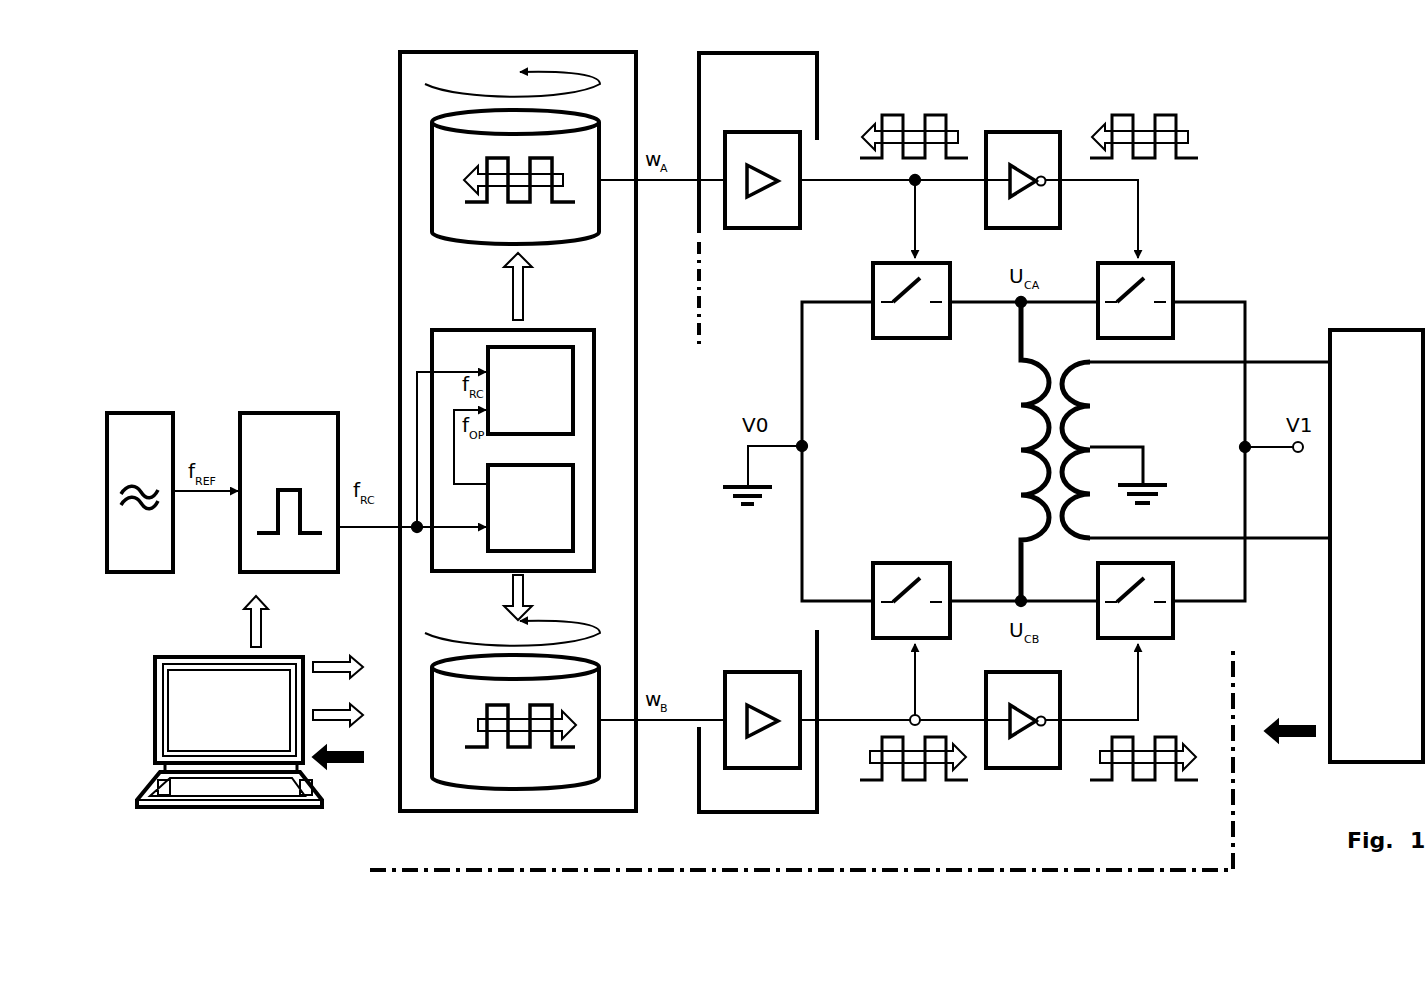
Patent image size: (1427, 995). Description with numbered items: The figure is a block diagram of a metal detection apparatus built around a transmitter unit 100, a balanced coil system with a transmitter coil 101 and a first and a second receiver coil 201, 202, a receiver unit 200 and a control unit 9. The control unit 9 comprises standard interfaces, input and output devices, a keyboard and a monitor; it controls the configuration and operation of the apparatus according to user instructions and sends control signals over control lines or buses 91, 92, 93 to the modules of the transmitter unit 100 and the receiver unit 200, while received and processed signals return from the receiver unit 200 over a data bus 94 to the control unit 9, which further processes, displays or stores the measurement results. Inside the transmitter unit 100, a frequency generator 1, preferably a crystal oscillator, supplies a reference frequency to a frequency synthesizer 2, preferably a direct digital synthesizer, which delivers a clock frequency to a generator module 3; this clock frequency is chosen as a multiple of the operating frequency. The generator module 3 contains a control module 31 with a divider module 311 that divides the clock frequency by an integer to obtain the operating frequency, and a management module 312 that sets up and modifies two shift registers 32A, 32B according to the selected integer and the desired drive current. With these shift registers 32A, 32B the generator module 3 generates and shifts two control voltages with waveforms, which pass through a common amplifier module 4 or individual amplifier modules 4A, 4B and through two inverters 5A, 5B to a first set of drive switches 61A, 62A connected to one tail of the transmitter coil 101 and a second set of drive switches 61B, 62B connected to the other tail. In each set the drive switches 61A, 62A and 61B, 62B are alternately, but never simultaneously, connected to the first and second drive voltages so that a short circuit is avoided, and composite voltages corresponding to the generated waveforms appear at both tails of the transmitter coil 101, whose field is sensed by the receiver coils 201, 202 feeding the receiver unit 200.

The frequency generator 1 is at (140, 492).
The frequency synthesizer 2 is at (289, 492).
The generator module 3 is at (518, 431).
The control module 31 is at (513, 450).
The divider module 311 is at (530, 508).
The management module 312 is at (530, 390).
The shift register 32A is at (512, 158).
The shift register 32B is at (512, 705).
The amplifier module 4 is at (758, 432).
The amplifier module 4A is at (762, 180).
The amplifier module 4B is at (762, 720).
The inverter 5A is at (1023, 180).
The inverter 5B is at (1023, 720).
The drive switch 61A is at (911, 300).
The drive switch 61B is at (911, 600).
The drive switch 62A is at (1135, 300).
The drive switch 62B is at (1135, 600).
The control unit 9 is at (229, 732).
The control line or bus 91 is at (338, 653).
The control line or bus 92 is at (270, 621).
The control line or bus 93 is at (338, 701).
The data bus 94 is at (817, 756).
The transmitter unit 100 is at (801, 760).
The transmitter coil 101 is at (1015, 428).
The receiver unit 200 is at (1376, 546).
The first receiver coil 201 is at (1138, 416).
The second receiver coil 202 is at (1105, 483).